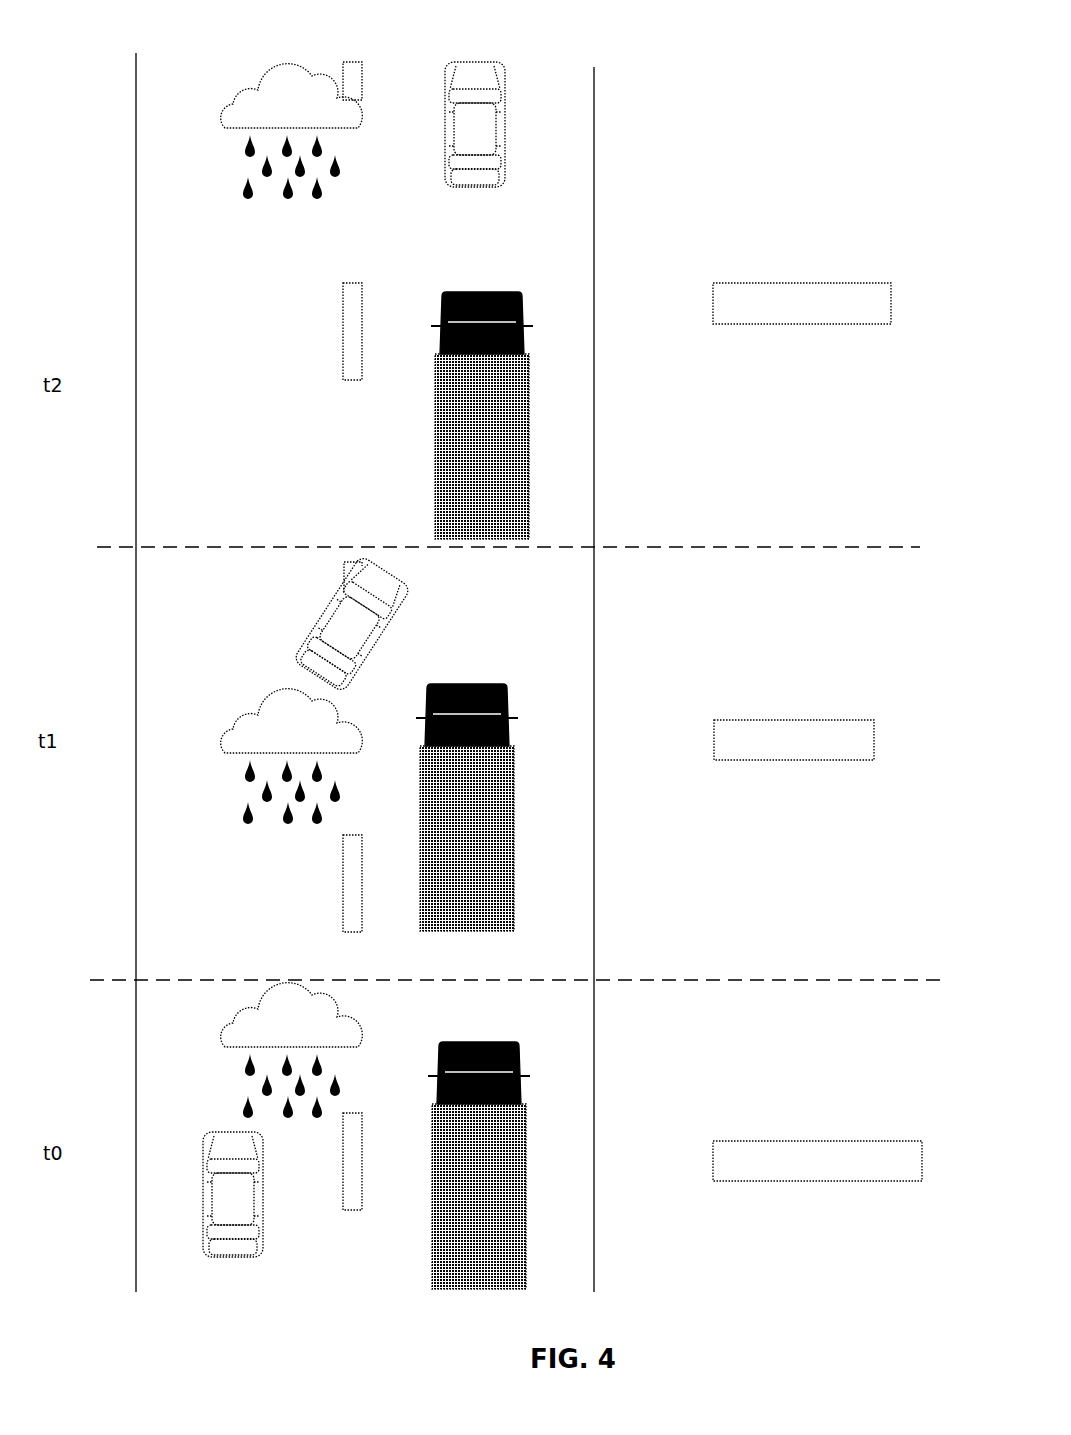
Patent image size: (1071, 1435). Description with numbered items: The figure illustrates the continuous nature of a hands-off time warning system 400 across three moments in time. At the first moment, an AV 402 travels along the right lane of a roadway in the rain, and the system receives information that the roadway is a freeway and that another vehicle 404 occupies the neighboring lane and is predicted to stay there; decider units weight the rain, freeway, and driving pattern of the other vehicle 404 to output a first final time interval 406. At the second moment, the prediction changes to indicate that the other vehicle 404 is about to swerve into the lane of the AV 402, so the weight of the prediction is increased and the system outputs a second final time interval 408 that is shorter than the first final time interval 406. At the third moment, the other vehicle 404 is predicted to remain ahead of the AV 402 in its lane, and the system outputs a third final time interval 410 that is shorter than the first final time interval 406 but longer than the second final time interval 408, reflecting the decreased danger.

The driving scenario 400 is at (101, 66).
The AV 402 is at (522, 478).
The other vehicle 404 is at (506, 130).
The first final time interval 406 is at (818, 1141).
The second final time interval 408 is at (794, 720).
The third final time interval 410 is at (803, 283).